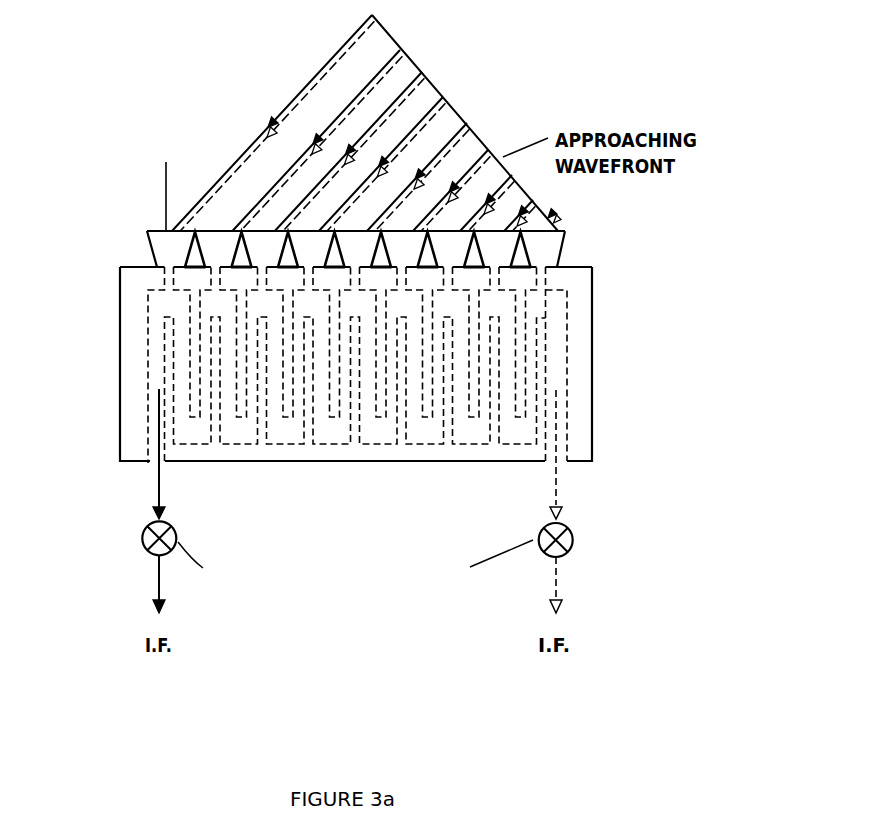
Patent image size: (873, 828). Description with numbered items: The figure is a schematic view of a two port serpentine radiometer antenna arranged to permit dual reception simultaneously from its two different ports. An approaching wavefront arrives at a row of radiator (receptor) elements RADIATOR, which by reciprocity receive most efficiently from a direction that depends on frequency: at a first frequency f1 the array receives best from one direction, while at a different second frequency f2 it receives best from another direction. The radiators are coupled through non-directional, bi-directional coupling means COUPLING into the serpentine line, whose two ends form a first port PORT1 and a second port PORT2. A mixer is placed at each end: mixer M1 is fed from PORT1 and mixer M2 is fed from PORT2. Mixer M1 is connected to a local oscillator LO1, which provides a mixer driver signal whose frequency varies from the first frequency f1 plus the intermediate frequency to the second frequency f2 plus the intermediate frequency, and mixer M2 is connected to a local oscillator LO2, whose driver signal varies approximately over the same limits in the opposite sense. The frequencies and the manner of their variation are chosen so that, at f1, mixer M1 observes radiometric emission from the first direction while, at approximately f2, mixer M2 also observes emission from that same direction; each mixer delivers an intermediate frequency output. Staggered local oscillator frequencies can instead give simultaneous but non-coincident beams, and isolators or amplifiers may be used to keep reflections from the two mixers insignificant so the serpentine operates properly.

The first frequency f1 is at (285, 110).
The second frequency f2 is at (237, 172).
The radiator RADIATOR is at (565, 248).
The non-directional coupling mechanism COUPLING is at (562, 280).
The first port PORT1 is at (153, 465).
The second port PORT2 is at (560, 466).
The mixer M1 is at (167, 517).
The mixer M2 is at (548, 517).
The local oscillator LO1 is at (211, 564).
The local oscillator LO2 is at (482, 564).